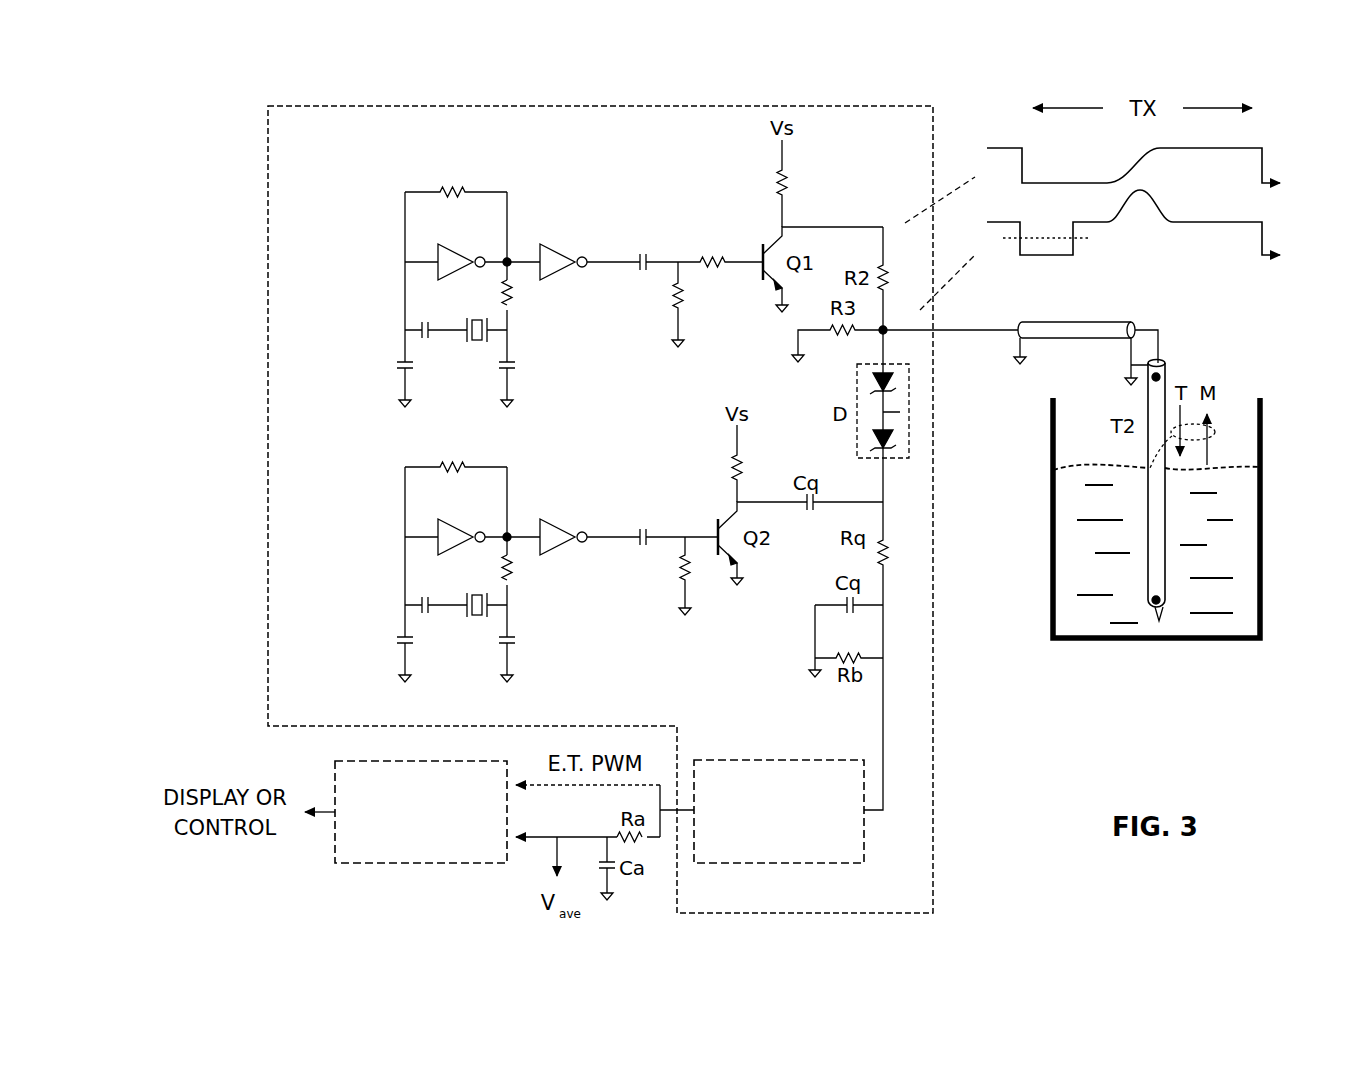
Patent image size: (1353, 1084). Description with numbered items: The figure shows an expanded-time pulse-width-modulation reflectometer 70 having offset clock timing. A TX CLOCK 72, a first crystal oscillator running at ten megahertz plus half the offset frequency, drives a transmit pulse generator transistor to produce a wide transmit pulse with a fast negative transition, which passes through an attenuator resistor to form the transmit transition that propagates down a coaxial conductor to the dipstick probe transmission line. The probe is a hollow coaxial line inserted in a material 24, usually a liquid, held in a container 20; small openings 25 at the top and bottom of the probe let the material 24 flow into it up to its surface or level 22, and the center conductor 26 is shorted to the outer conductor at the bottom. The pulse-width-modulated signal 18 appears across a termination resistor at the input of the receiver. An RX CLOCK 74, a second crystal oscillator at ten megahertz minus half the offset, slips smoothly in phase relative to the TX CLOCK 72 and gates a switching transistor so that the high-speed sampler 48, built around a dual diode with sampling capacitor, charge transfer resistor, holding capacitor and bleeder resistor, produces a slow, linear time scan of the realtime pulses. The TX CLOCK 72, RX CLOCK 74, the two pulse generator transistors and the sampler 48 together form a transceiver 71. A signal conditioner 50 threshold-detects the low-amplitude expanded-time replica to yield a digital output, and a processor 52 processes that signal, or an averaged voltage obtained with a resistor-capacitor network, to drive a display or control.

The expanded-time PWM reflectometer 70 is at (225, 140).
The transceiver 71 is at (266, 400).
The TX CLOCK 72 is at (403, 175).
The RX CLOCK 74 is at (360, 500).
The PWM signal waveform 18 is at (1076, 250).
The center conductor 26 is at (1160, 335).
The small openings 25 is at (1168, 370).
The surface or level 22 is at (1087, 474).
The container 20 is at (1262, 522).
The material 24 is at (1155, 554).
The high-speed sampler 48 is at (918, 590).
The signal conditioner 50 is at (864, 845).
The processor 52 is at (335, 845).